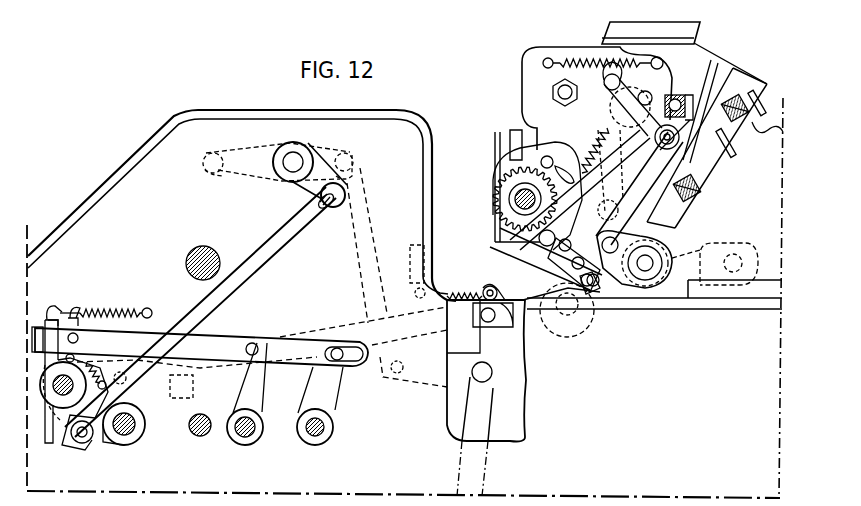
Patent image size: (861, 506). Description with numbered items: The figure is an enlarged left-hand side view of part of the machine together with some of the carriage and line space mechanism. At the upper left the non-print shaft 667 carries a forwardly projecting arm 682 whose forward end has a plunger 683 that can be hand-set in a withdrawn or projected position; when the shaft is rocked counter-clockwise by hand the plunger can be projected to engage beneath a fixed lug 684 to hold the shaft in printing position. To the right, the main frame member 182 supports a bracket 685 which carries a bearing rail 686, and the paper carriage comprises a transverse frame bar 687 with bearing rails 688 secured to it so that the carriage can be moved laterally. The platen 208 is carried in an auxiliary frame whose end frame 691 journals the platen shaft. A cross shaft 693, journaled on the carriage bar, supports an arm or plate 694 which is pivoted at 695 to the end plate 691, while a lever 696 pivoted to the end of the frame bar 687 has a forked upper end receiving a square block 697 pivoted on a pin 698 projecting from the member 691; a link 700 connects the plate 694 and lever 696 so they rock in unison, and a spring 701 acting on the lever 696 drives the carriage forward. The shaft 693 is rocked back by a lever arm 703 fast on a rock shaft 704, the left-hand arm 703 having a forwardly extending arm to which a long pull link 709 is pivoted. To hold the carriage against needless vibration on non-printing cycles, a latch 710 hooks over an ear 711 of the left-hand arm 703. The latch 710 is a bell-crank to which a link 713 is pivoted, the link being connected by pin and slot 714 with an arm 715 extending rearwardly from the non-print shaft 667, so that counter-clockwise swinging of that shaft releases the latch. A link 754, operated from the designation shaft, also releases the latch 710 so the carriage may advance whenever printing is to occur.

The main frame member 182 is at (407, 121).
The platen 208 is at (502, 150).
The non-print shaft 667 is at (293, 162).
The arm 682 is at (244, 152).
The plunger 683 is at (213, 172).
The fixed lug 684 is at (203, 163).
The bracket 685 is at (773, 268).
The bearing rail 686 is at (737, 123).
The transverse frame bar 687 is at (740, 80).
The bearing rails 688 is at (750, 87).
The end frame 691 is at (527, 70).
The cross shaft 693 is at (628, 287).
The arm or plate 694 is at (620, 300).
The pivot 695 is at (660, 243).
The lever 696 is at (718, 74).
The square block 697 is at (669, 94).
The pin 698 is at (676, 98).
The link 700 is at (592, 150).
The spring 701 is at (594, 137).
The lever arm 703 is at (565, 325).
The rock shaft 704 is at (560, 331).
The pull link 709 is at (483, 420).
The latch 710 is at (495, 360).
The ear 711 is at (508, 293).
The link 713 is at (373, 250).
The pin and slot 714 is at (355, 162).
The arm 715 is at (328, 148).
The link 754 is at (262, 340).